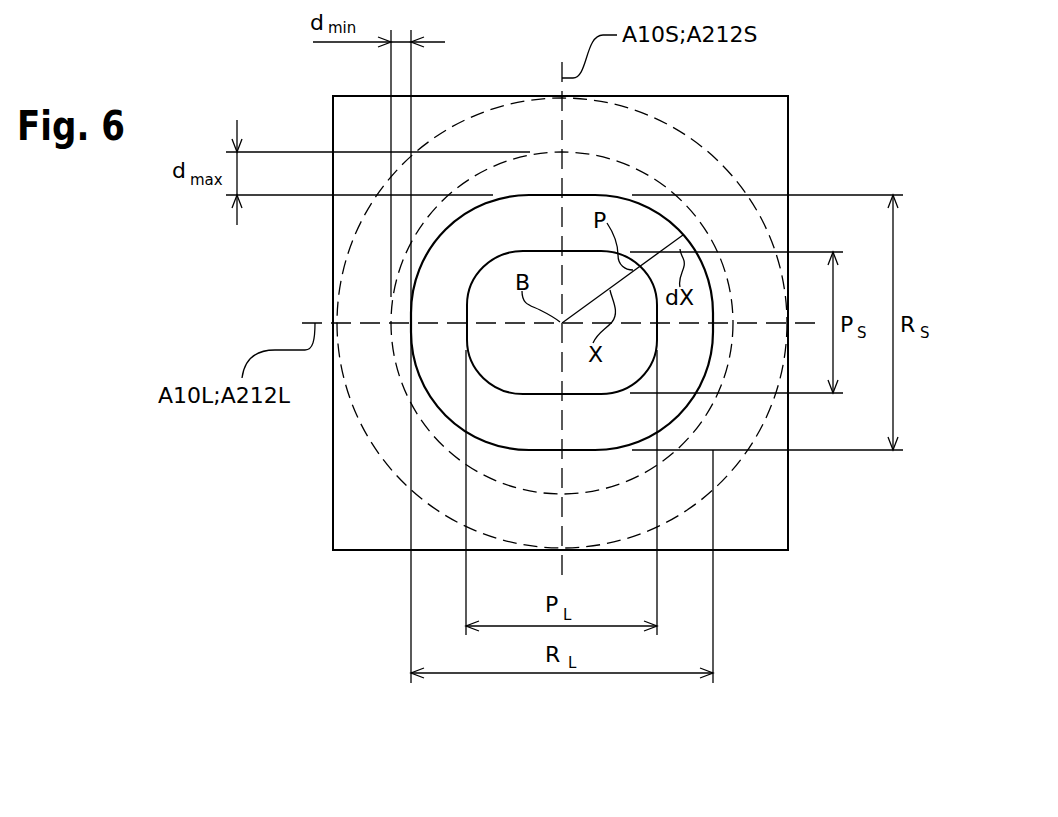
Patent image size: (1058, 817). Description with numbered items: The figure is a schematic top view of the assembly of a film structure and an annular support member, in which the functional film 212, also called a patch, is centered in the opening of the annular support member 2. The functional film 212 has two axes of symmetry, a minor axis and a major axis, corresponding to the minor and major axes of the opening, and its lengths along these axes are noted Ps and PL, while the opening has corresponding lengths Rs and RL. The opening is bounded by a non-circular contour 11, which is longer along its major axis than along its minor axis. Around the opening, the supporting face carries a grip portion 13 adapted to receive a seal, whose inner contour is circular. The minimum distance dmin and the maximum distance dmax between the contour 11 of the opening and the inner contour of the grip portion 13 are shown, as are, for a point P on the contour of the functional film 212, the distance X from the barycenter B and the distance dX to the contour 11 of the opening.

The light guide body 2 is at (420, 262).
The contour of the opening 11 is at (477, 368).
The grip portion 13 is at (373, 386).
The functional film 212 is at (448, 420).